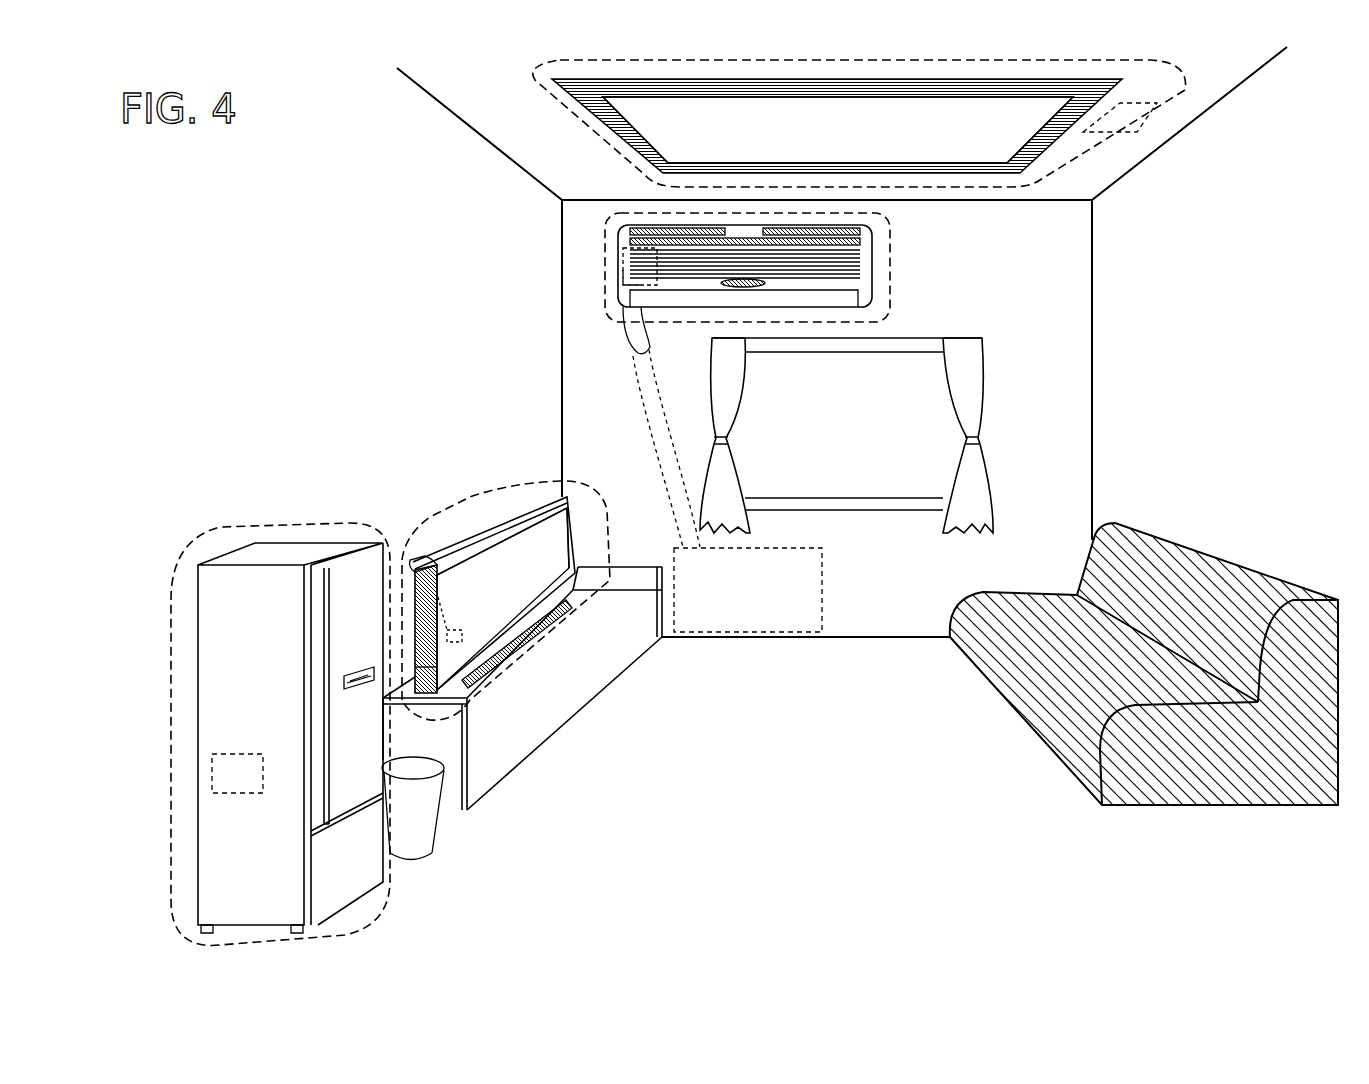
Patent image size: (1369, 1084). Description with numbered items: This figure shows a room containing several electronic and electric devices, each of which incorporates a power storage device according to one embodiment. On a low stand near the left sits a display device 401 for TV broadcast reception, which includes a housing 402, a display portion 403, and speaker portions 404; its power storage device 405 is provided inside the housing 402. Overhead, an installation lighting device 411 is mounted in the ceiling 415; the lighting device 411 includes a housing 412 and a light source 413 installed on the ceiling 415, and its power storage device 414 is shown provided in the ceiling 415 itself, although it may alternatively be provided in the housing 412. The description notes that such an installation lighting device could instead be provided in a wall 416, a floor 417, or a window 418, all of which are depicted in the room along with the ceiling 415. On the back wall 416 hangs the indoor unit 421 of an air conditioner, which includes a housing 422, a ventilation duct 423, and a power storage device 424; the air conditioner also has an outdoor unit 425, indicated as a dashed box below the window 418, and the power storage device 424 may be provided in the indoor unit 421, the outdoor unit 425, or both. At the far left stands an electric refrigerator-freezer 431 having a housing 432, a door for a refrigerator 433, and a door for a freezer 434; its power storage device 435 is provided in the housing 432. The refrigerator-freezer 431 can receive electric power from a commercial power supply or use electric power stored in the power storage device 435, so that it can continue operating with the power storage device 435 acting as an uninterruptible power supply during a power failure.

The display device 401 is at (443, 502).
The housing 402 is at (503, 515).
The display portion 403 is at (537, 508).
The speaker portions 404 is at (552, 520).
The power storage device 405 is at (410, 560).
The installation lighting device 411 is at (560, 108).
The housing 412 is at (610, 123).
The light source 413 is at (692, 148).
The power storage device 414 is at (1137, 118).
The ceiling 415 is at (488, 97).
The wall 416 is at (1160, 230).
The floor 417 is at (885, 694).
The window 418 is at (910, 480).
The indoor unit 421 is at (603, 235).
The housing 422 is at (623, 260).
The ventilation duct 423 is at (640, 300).
The power storage device 424 is at (625, 283).
The outdoor unit 425 is at (725, 584).
The electric refrigerator-freezer 431 is at (170, 593).
The housing 432 is at (212, 653).
The door for a refrigerator 433 is at (354, 738).
The door for a freezer 434 is at (354, 873).
The power storage device 435 is at (212, 772).